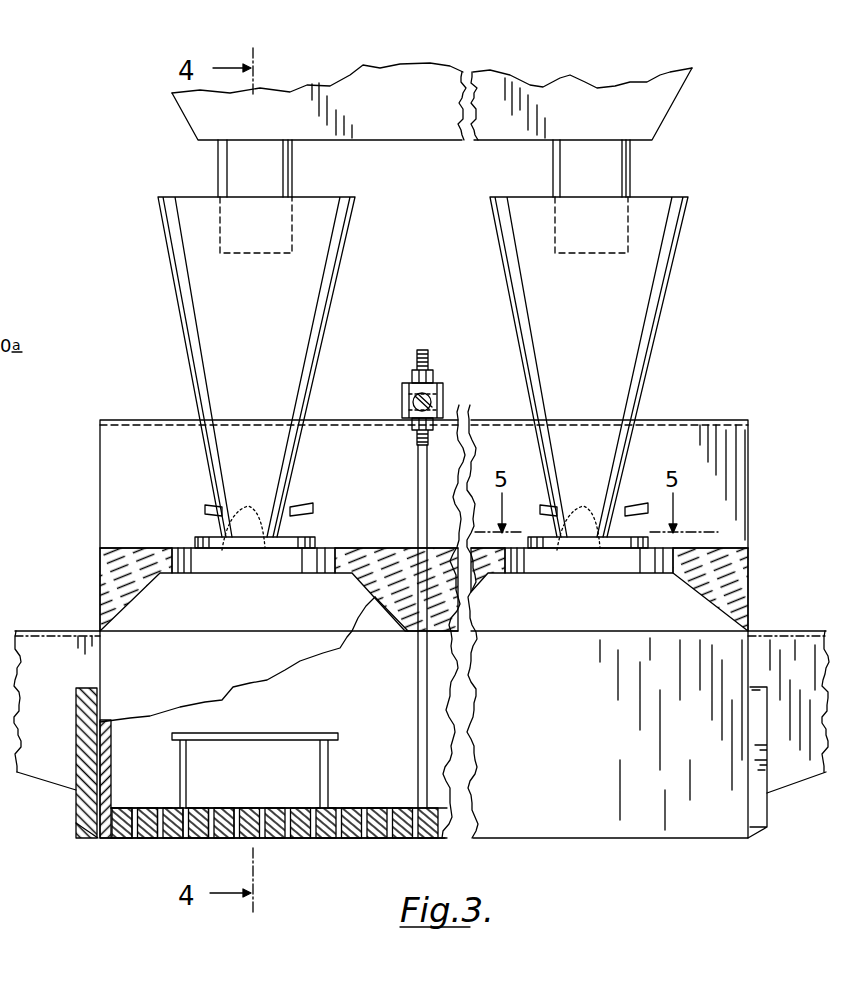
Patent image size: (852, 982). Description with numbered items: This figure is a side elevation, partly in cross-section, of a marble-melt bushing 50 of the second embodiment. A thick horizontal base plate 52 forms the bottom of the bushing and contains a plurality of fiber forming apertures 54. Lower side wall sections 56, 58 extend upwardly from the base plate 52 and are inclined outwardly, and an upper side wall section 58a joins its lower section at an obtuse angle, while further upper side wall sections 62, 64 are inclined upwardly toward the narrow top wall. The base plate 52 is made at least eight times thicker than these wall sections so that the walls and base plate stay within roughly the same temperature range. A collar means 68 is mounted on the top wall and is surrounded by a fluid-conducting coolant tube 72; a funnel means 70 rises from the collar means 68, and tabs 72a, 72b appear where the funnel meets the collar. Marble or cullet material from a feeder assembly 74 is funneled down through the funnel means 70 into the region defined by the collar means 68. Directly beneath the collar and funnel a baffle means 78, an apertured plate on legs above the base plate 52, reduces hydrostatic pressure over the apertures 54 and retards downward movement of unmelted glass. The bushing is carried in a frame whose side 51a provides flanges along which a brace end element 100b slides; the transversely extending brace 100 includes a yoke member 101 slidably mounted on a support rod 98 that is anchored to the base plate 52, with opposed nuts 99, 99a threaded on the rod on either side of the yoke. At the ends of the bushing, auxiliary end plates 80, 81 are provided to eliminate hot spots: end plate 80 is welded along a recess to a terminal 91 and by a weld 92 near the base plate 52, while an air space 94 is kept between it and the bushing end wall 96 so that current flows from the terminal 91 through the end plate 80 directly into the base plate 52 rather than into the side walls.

The feeder assembly 74 is at (176, 121).
The funnel means 70 is at (163, 233).
The marble-melt bushing 50 is at (88, 473).
The frame side 51a is at (143, 437).
The additional upper side wall section 62 is at (140, 592).
The additional upper side wall section 64 is at (392, 615).
The coolant tube 72 is at (320, 553).
The collar means 68 is at (298, 536).
The left bracket tab 72a is at (207, 510).
The right bracket tab 72b is at (323, 485).
The support rod 98 is at (420, 482).
The nut 99 is at (413, 431).
The nut 99a is at (413, 372).
The brace 100 is at (446, 398).
The brace end element 100b is at (401, 410).
The yoke member 101 is at (448, 404).
The terminal 91 is at (50, 640).
The end plate 80 is at (75, 808).
The air space 94 is at (97, 688).
The end wall 96 is at (105, 780).
The weld 92 is at (93, 836).
The base plate 52 is at (136, 833).
The fiber forming apertures 54 is at (193, 840).
The baffle means 78 is at (262, 741).
The upper side wall section 58a is at (282, 609).
The lower side wall section 58 is at (274, 666).
The lower side wall section 56 is at (274, 714).
The end plate 81 is at (755, 800).